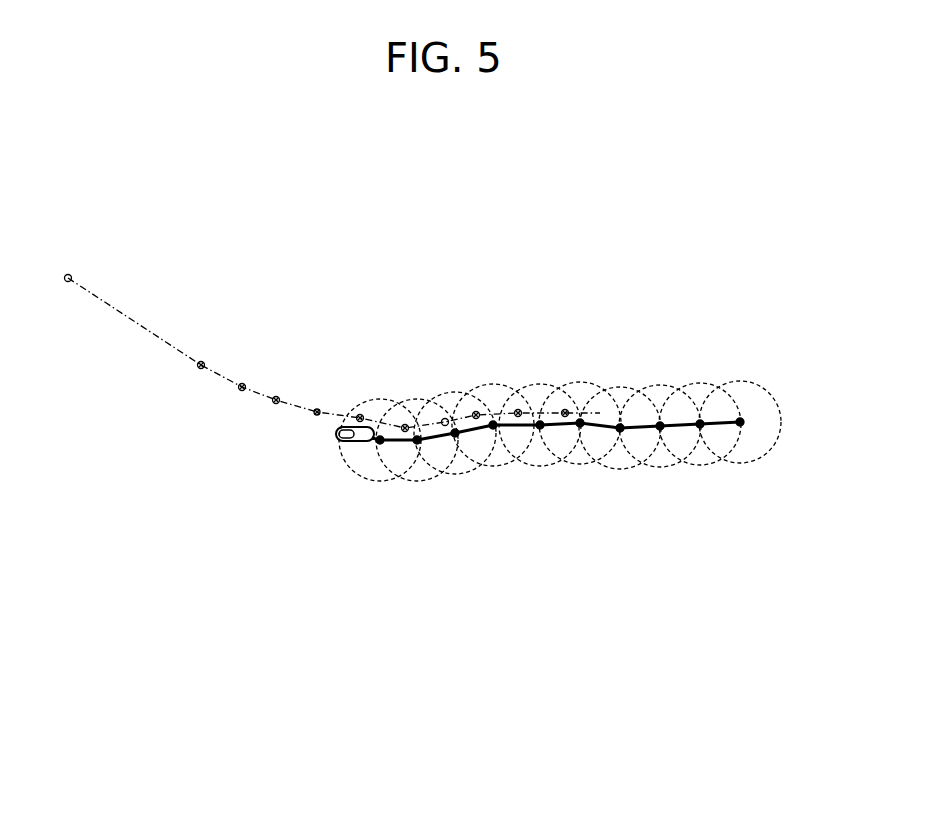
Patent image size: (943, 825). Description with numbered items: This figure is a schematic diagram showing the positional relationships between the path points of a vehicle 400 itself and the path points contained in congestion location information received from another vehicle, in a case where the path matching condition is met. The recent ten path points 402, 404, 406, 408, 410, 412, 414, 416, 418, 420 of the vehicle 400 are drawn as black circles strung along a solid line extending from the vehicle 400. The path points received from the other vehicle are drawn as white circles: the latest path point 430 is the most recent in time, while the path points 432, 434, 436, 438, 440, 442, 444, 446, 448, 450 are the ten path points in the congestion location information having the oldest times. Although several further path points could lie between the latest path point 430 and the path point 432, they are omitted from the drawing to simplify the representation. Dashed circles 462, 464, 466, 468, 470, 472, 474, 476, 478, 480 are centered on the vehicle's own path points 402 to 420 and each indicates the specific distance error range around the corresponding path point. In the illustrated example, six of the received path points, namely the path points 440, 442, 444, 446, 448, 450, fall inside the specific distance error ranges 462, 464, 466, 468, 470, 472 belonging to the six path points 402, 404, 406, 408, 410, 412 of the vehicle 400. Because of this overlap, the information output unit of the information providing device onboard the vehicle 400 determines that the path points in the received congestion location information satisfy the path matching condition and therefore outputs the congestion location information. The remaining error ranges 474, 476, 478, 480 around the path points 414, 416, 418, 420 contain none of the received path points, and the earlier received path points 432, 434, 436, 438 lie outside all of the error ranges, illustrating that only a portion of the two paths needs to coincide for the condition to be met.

The vehicle 400 is at (311, 507).
The path point 402 is at (377, 505).
The path point 404 is at (432, 503).
The path point 406 is at (477, 493).
The path point 408 is at (530, 483).
The path point 410 is at (584, 503).
The path point 412 is at (616, 482).
The path point 414 is at (665, 506).
The path point 416 is at (696, 484).
The path point 418 is at (744, 501).
The path point 420 is at (776, 481).
The latest path point 430 is at (110, 234).
The path point 432 is at (168, 428).
The path point 434 is at (227, 316).
The path point 436 is at (242, 462).
The path point 438 is at (302, 341).
The path point 440 is at (344, 327).
The path point 442 is at (389, 357).
The path point 444 is at (426, 328).
The path point 446 is at (460, 345).
The path point 448 is at (508, 344).
The path point 450 is at (565, 365).
The specific distance error range 462 is at (365, 527).
The specific distance error range 464 is at (417, 529).
The specific distance error range 466 is at (456, 516).
The specific distance error range 468 is at (509, 502).
The specific distance error range 470 is at (540, 357).
The specific distance error range 472 is at (582, 372).
The specific distance error range 474 is at (627, 363).
The specific distance error range 476 is at (663, 376).
The specific distance error range 478 is at (712, 374).
The specific distance error range 480 is at (758, 373).